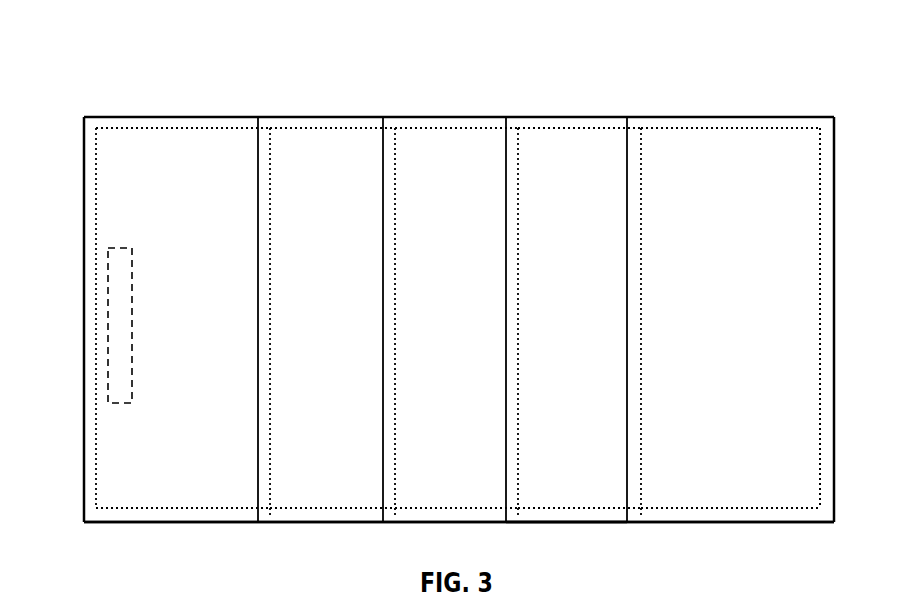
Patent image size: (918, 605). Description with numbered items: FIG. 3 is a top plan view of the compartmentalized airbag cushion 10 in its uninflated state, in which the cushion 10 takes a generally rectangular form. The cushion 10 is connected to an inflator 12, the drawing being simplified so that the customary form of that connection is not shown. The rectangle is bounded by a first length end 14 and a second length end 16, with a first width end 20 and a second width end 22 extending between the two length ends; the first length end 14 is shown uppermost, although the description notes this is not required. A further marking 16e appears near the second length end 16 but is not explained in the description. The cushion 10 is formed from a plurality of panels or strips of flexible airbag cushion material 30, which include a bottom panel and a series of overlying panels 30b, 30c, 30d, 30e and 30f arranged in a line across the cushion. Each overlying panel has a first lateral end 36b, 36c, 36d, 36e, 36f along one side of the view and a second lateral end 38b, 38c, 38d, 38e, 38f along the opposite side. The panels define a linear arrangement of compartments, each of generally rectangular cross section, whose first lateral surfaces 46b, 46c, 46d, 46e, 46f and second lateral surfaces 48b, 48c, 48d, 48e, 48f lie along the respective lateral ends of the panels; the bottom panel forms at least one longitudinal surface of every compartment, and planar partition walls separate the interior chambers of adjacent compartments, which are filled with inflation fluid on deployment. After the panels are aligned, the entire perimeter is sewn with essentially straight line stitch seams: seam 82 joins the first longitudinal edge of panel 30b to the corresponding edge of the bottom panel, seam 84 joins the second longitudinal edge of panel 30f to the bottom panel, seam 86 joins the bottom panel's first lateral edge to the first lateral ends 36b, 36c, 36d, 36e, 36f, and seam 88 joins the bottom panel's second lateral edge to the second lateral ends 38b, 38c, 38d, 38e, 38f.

The airbag cushion 10 is at (628, 80).
The inflator 12 is at (121, 248).
The first length end 14 is at (378, 106).
The second length end 16 is at (139, 531).
The bottom edge portion 16e is at (605, 512).
The first width end 20 is at (836, 199).
The second width end 22 is at (76, 208).
The panels of flexible airbag cushion material 30 is at (750, 212).
The overlying panel 30b is at (221, 284).
The overlying panel 30c is at (346, 284).
The overlying panel 30d is at (471, 284).
The overlying panel 30e is at (597, 284).
The overlying panel 30f is at (755, 304).
The first lateral end 36b is at (158, 117).
The first lateral end 36c is at (287, 117).
The first lateral end 36d is at (430, 117).
The first lateral end 36e is at (525, 117).
The first lateral end 36f is at (700, 117).
The second lateral end 38b is at (228, 522).
The second lateral end 38c is at (356, 522).
The second lateral end 38d is at (446, 522).
The second lateral end 38e is at (561, 521).
The second lateral end 38f is at (759, 522).
The first lateral surface 46b is at (203, 128).
The first lateral surface 46c is at (327, 128).
The first lateral surface 46d is at (476, 128).
The first lateral surface 46e is at (580, 128).
The first lateral surface 46f is at (745, 127).
The second lateral surface 48b is at (162, 510).
The second lateral surface 48c is at (288, 510).
The second lateral surface 48d is at (474, 512).
The second lateral surface 48e is at (594, 510).
The second lateral surface 48f is at (789, 510).
The stitch seam 82 is at (93, 467).
The stitch seam 84 is at (820, 433).
The stitch seam 86 is at (326, 130).
The stitch seam 88 is at (456, 506).